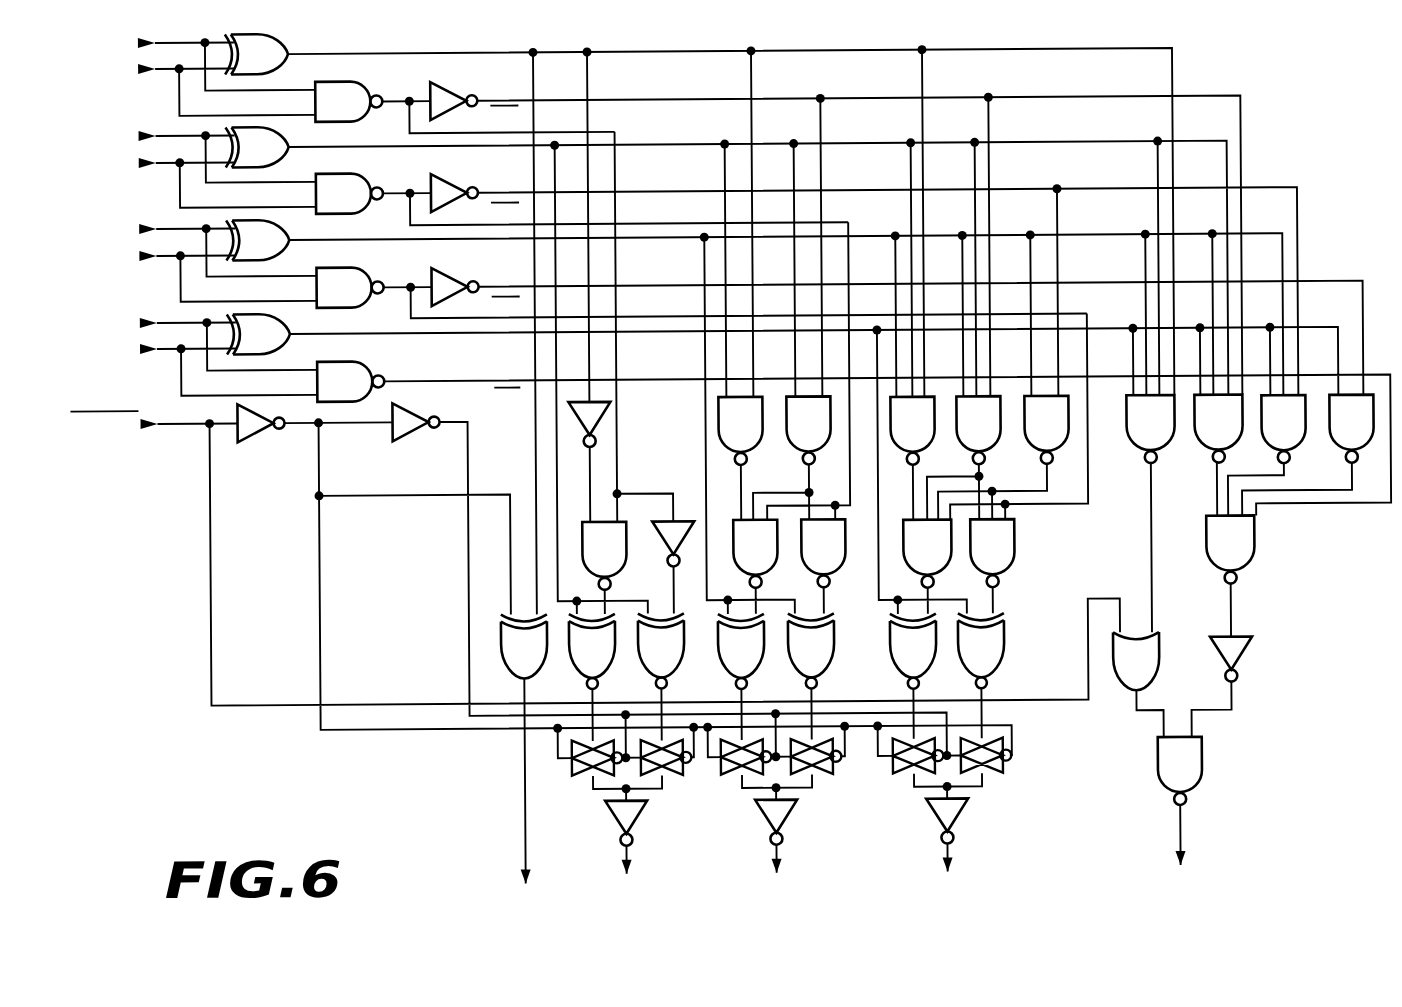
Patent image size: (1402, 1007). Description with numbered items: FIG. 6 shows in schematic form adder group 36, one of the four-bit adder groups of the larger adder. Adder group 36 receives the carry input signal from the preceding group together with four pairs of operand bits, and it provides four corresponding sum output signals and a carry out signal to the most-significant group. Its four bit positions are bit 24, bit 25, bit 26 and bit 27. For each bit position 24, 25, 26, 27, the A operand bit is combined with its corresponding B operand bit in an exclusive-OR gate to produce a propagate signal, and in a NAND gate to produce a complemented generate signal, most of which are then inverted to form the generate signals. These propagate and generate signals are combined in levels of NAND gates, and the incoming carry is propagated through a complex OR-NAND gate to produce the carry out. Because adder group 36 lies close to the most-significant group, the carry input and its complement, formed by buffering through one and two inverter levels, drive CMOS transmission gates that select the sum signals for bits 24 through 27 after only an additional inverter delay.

The adder group 36 is at (280, 812).
The bit 24 propagate/generate stage 24 is at (286, 76).
The bit 25 propagate/generate stage 25 is at (286, 169).
The bit 26 propagate/generate stage 26 is at (287, 262).
The bit 27 propagate/generate stage 27 is at (241, 356).